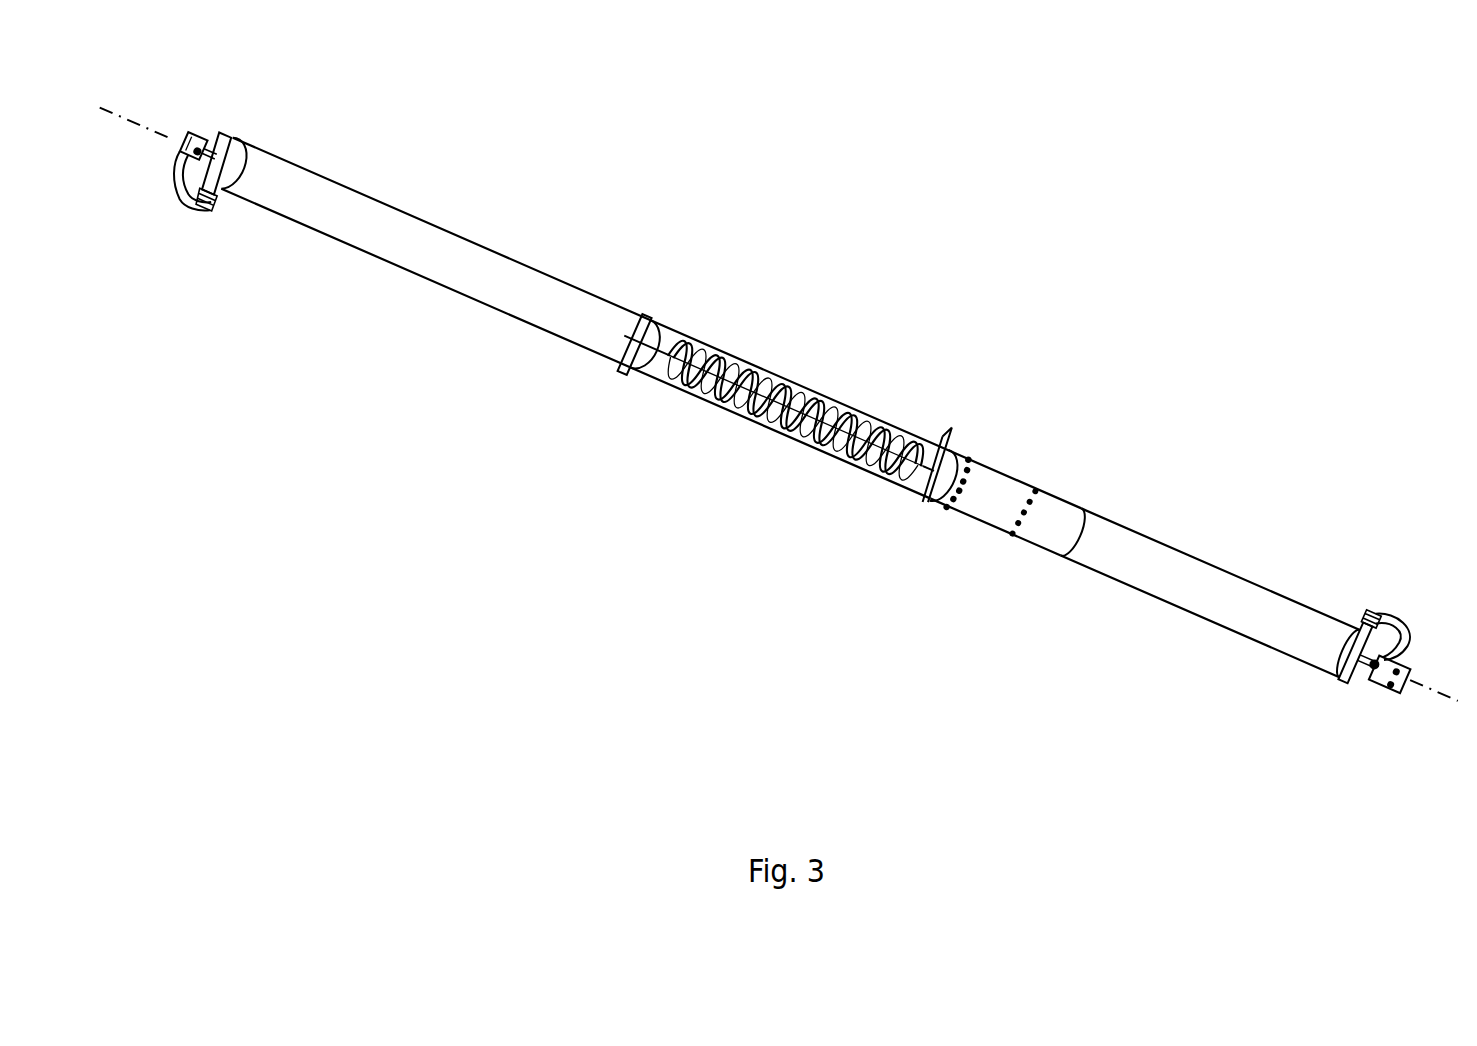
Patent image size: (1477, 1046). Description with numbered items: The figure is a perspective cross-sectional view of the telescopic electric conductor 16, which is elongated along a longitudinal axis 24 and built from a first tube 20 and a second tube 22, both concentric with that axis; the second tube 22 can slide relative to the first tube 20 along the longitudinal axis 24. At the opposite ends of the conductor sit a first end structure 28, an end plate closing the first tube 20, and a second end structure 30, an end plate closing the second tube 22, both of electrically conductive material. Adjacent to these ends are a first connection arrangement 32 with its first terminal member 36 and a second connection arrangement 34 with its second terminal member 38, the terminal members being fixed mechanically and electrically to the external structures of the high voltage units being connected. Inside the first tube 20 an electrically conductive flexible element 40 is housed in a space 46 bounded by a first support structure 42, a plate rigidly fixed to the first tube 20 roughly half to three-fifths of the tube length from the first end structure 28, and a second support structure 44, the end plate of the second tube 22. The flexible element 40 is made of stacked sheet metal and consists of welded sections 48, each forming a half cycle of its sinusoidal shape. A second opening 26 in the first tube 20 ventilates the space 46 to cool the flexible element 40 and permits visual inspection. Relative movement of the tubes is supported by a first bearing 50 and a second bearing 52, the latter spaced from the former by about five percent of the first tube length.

The telescopic electric conductor 16 is at (658, 176).
The first tube 20 is at (399, 233).
The second tube 22 is at (1204, 580).
The longitudinal axis 24 is at (1459, 699).
The second opening 26 is at (886, 441).
The first end structure 28 is at (224, 138).
The second end structure 30 is at (1344, 686).
The first connection arrangement 32 is at (205, 99).
The second connection arrangement 34 is at (1355, 714).
The first terminal member 36 is at (181, 147).
The second terminal member 38 is at (1407, 660).
The flexible element 40 is at (775, 386).
The first support structure 42 is at (649, 322).
The second support structure 44 is at (947, 453).
The space 46 is at (791, 437).
The sections 48 is at (686, 345).
The first bearing 50 is at (966, 460).
The second bearing 52 is at (1034, 488).